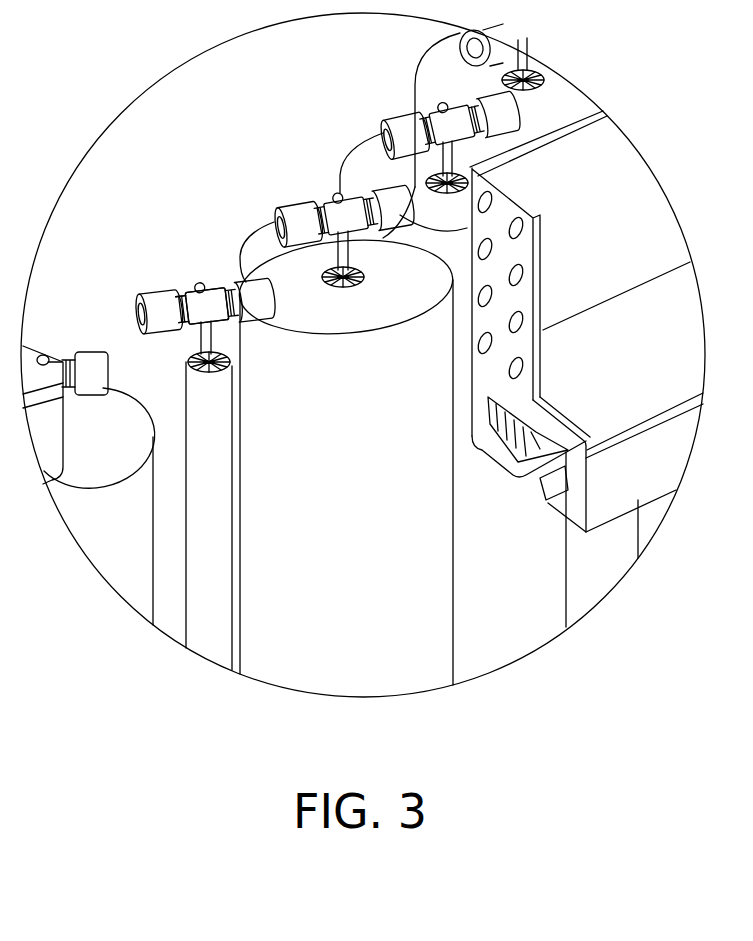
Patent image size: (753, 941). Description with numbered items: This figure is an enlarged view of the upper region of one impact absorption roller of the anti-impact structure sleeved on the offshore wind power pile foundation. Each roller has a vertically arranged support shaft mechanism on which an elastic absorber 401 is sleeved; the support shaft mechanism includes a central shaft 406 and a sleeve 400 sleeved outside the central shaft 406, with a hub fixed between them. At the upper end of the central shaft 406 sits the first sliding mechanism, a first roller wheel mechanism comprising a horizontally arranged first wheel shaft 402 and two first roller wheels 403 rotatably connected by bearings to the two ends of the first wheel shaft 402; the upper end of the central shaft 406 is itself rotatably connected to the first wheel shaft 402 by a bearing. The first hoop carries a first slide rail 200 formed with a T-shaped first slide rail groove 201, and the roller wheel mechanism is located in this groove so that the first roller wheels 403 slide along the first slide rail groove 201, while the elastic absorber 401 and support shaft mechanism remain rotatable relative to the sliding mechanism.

The first slide rail 200 is at (641, 489).
The first slide rail groove 201 is at (548, 480).
The sleeve 400 is at (205, 410).
The elastic absorber 401 is at (365, 524).
The first wheel shaft 402 is at (192, 313).
The first roller wheel 403 is at (160, 310).
The central shaft 406 is at (213, 337).